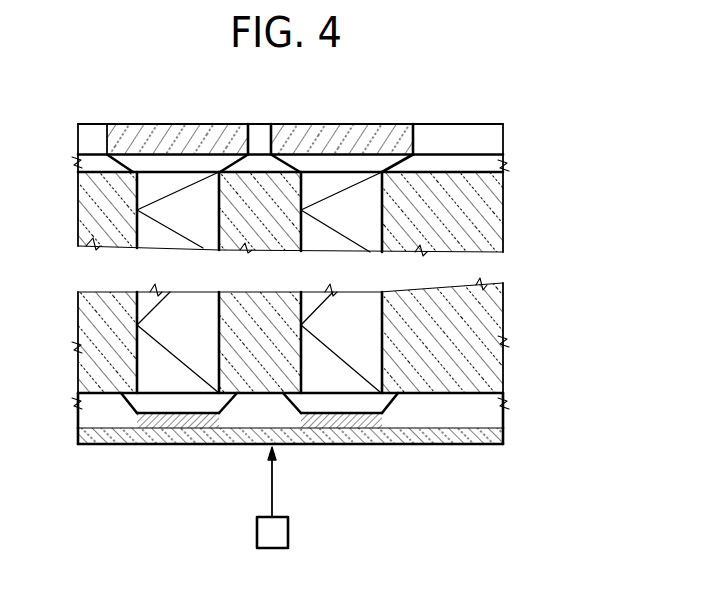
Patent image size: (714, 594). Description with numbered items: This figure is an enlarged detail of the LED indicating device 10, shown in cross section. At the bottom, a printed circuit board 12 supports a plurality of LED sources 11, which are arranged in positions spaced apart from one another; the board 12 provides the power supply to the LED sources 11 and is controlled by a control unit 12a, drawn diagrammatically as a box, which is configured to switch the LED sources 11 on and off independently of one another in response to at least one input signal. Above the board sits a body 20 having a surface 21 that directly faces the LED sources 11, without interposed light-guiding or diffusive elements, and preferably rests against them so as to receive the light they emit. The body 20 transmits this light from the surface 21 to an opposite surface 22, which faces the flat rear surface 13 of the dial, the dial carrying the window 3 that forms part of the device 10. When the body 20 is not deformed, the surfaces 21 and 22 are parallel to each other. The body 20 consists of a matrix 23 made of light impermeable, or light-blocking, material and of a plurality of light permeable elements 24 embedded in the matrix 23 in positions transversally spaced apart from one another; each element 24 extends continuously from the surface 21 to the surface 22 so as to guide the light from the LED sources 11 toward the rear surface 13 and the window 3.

The window 3 is at (82, 140).
The opposite surface 22 is at (441, 160).
The flat rear surface 13 is at (468, 163).
The LED indicating device 10 is at (351, 420).
The body 20 is at (343, 395).
The light permeable elements 24 is at (157, 377).
The matrix 23 is at (265, 385).
The surface 21 is at (463, 406).
The LED sources 11 is at (168, 415).
The printed circuit board 12 is at (435, 444).
The control unit 12a is at (257, 529).